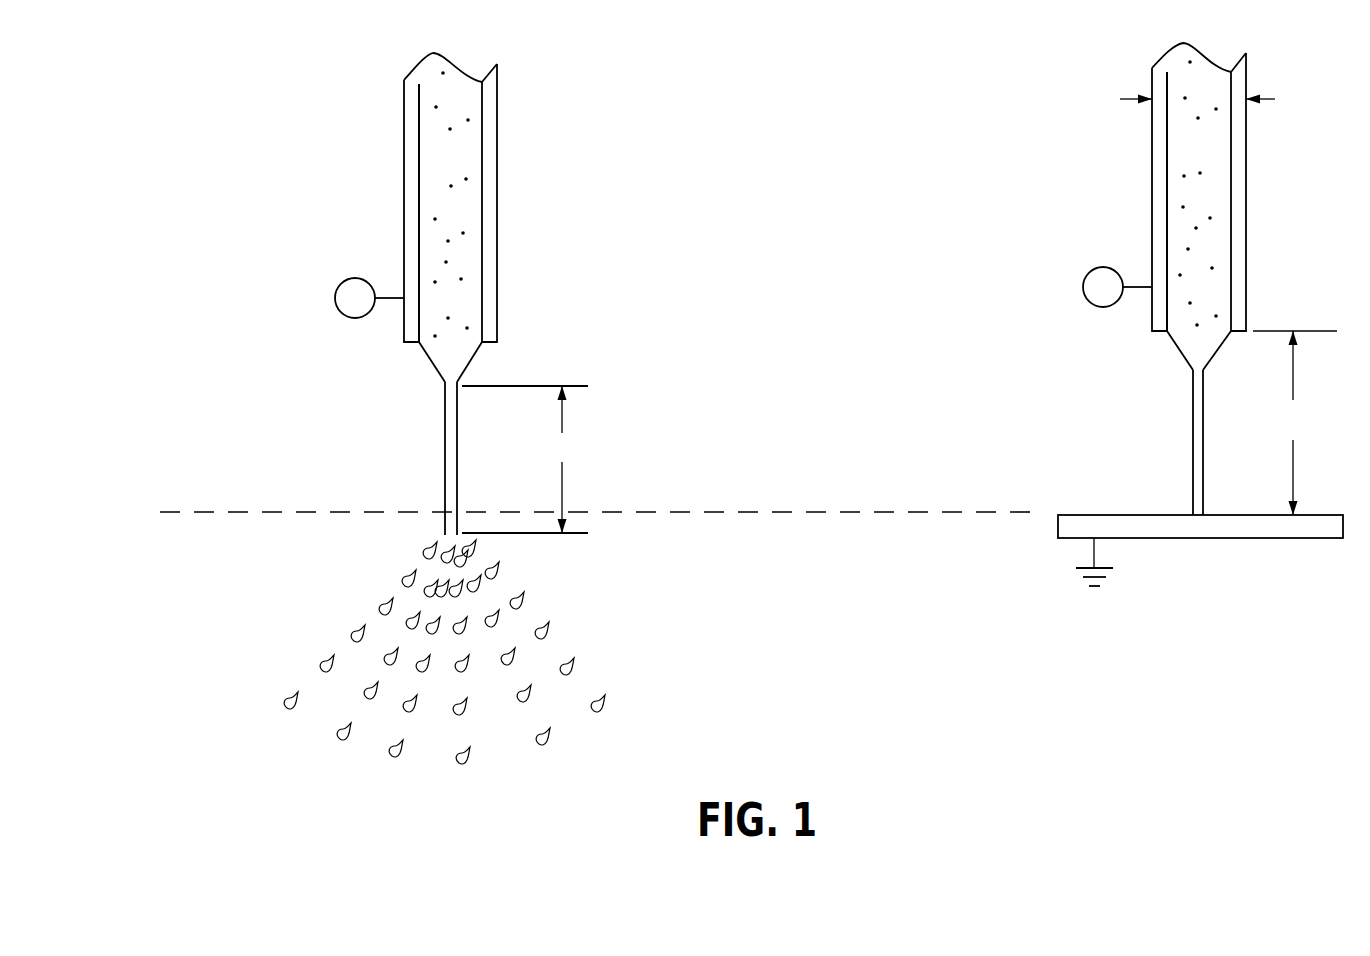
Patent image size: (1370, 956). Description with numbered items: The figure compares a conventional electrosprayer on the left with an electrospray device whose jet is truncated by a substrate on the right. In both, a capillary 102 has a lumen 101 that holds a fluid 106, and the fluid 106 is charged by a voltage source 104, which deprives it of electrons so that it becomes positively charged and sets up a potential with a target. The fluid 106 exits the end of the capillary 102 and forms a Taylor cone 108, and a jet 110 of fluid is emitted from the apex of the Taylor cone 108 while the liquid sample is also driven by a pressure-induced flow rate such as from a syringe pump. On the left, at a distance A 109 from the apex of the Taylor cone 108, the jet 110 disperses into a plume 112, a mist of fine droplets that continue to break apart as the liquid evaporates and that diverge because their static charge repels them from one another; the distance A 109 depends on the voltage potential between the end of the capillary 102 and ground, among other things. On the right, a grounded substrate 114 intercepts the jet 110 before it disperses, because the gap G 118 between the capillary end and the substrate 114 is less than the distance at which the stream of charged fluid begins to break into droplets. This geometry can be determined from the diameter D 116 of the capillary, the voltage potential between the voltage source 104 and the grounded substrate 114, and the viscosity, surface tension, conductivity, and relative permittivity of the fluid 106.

The lumen 101 is at (430, 125).
The capillary 102 is at (404, 190).
The voltage source 104 is at (336, 284).
The fluid 106 is at (466, 167).
The Taylor cone 108 is at (430, 362).
The distance A 109 is at (564, 418).
The jet 110 is at (445, 456).
The plume 112 is at (357, 609).
The substrate 114 is at (1060, 545).
The diameter D 116 is at (1262, 106).
The gap G 118 is at (1294, 465).